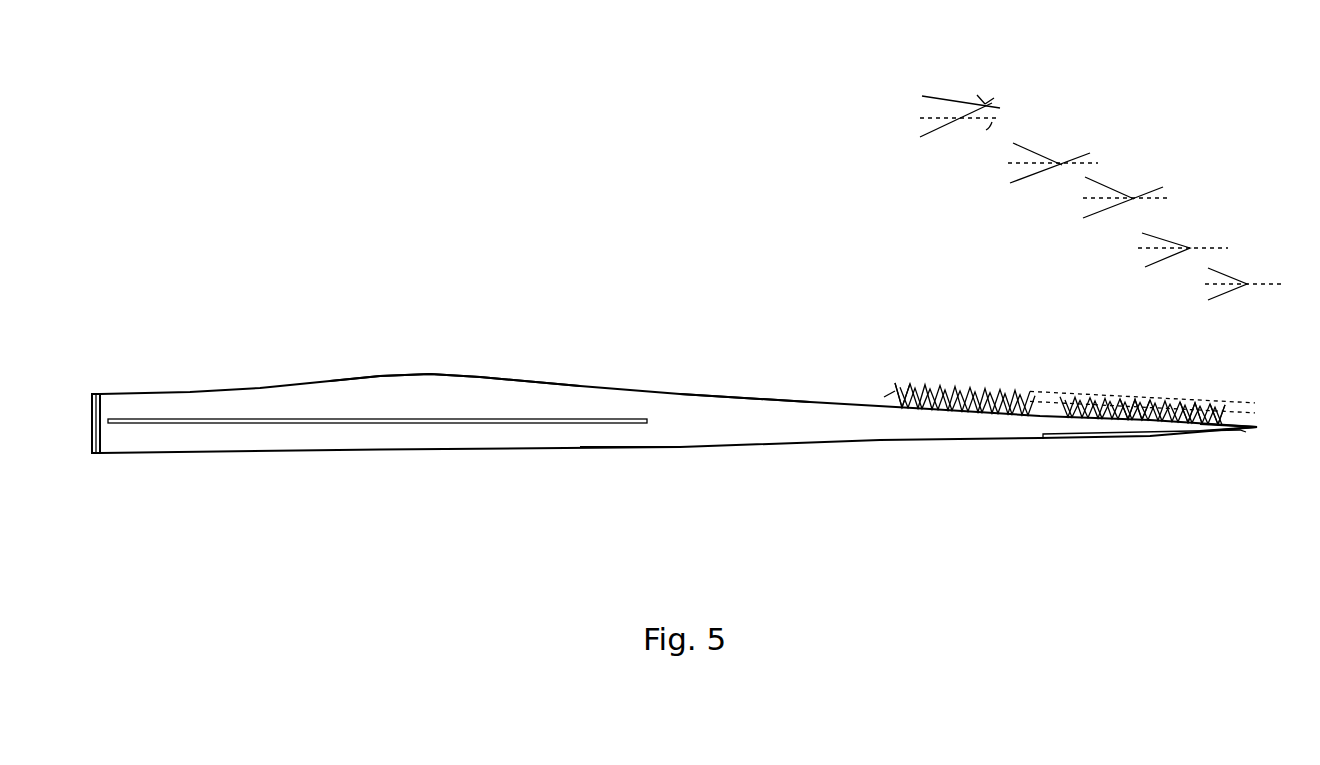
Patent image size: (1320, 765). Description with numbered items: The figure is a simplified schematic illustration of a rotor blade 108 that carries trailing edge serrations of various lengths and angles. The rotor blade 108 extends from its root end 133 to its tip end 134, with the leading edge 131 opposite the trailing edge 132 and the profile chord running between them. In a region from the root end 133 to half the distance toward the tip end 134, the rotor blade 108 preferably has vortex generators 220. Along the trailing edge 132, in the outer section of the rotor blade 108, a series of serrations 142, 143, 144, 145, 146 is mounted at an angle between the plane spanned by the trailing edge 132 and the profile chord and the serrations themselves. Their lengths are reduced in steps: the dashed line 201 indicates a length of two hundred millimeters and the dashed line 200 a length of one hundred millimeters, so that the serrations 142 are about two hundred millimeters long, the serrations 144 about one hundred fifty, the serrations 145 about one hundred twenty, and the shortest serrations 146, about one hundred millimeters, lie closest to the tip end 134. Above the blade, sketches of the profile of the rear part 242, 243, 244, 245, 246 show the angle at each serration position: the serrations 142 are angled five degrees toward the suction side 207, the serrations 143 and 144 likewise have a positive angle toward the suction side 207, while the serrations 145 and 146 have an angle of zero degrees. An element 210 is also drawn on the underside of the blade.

The rotor blade 108 is at (732, 432).
The leading edge 131 is at (660, 450).
The trailing edge 132 is at (730, 393).
The root end 133 is at (92, 425).
The tip end 134 is at (1257, 428).
The serrations 142 is at (920, 385).
The serrations 143 is at (1078, 398).
The serrations 144 is at (1140, 420).
The serrations 145 is at (1195, 423).
The serrations 146 is at (1222, 398).
The dashed line 200 is at (893, 395).
The dashed line 201 is at (895, 385).
The suction side 207 is at (433, 398).
The underside strip 210 is at (1063, 440).
The vortex generators 220 is at (410, 423).
The profile of the rear part 242 is at (968, 113).
The profile of the rear part 243 is at (1065, 150).
The profile of the rear part 244 is at (1133, 192).
The profile of the rear part 245 is at (1193, 243).
The profile of the rear part 246 is at (1248, 277).